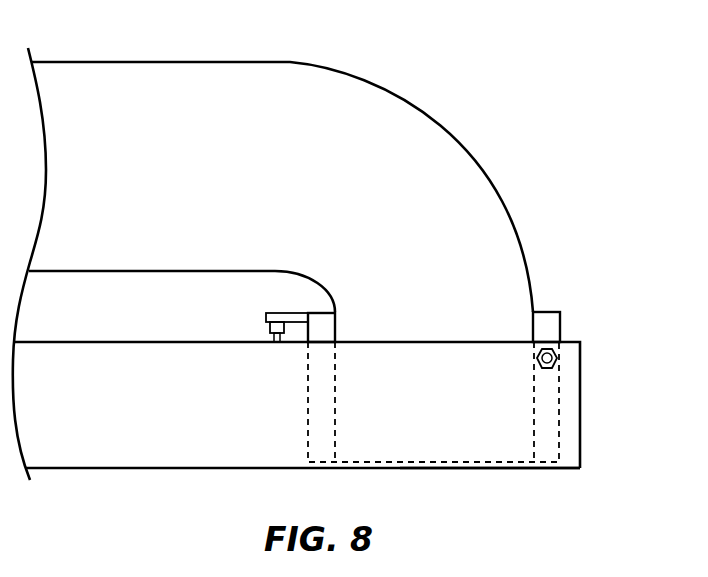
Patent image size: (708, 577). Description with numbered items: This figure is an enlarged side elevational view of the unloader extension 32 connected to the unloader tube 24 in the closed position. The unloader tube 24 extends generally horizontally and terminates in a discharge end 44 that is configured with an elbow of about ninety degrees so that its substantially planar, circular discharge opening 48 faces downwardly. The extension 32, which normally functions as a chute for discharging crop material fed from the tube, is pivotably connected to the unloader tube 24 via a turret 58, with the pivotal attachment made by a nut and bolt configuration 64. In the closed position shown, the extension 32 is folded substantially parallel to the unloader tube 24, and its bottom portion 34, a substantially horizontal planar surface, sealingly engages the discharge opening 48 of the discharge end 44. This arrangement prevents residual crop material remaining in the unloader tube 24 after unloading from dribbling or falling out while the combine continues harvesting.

The unloader tube 24 is at (250, 62).
The unloader extension 32 is at (103, 470).
The bottom portion 34 is at (452, 470).
The discharge end 44 is at (598, 396).
The discharge opening 48 is at (444, 463).
The turret 58 is at (545, 312).
The nut and bolt configuration 64 is at (558, 365).